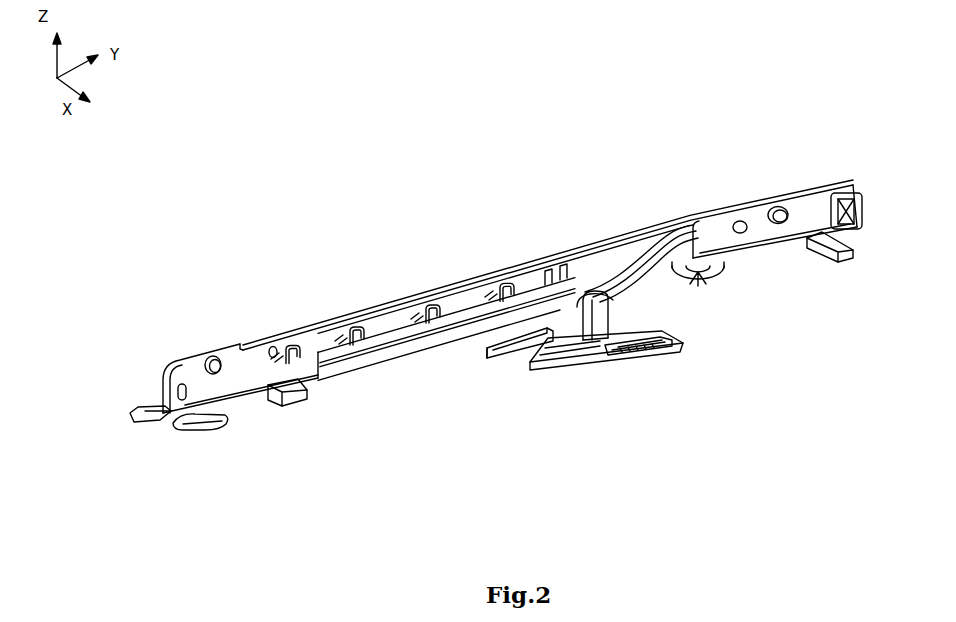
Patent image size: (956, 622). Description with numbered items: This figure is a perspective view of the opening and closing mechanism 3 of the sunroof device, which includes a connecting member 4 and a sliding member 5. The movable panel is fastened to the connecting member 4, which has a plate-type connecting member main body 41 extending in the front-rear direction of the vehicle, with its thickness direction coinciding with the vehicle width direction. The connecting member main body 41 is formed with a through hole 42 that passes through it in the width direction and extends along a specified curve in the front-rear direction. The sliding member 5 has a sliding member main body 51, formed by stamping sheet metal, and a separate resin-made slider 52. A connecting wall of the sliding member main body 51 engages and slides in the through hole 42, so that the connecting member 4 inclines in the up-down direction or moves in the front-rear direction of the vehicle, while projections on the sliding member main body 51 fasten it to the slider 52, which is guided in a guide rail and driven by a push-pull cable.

The opening and closing mechanism 3 is at (755, 47).
The connecting member 4 is at (348, 319).
The connecting member main body 41 is at (272, 363).
The through hole 42 is at (480, 317).
The sliding member 5 is at (620, 368).
The sliding member main body 51 is at (562, 368).
The slider 52 is at (628, 358).